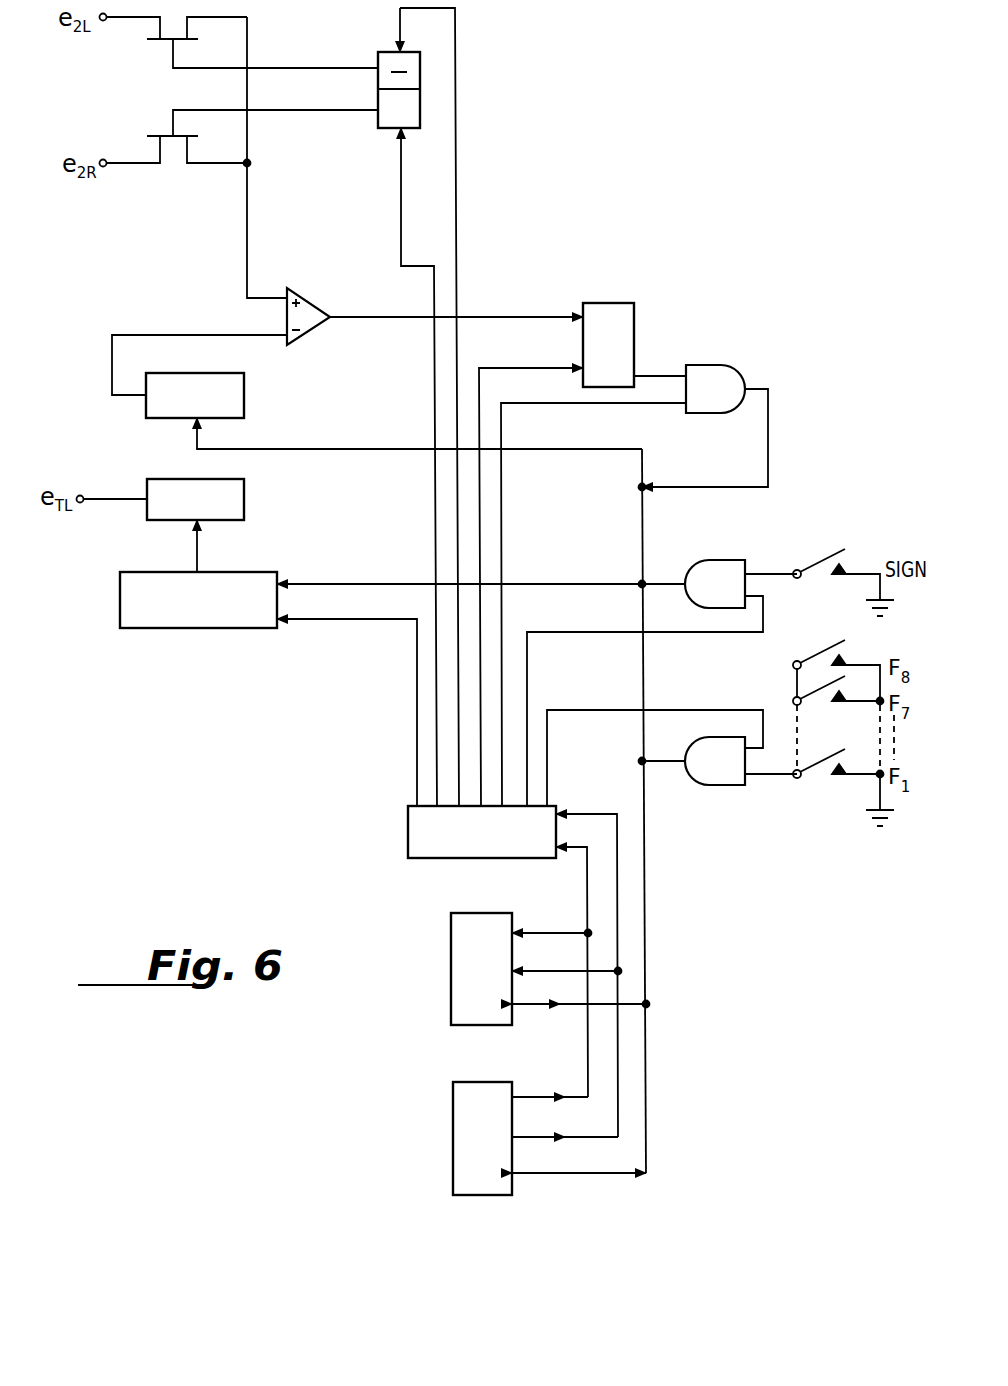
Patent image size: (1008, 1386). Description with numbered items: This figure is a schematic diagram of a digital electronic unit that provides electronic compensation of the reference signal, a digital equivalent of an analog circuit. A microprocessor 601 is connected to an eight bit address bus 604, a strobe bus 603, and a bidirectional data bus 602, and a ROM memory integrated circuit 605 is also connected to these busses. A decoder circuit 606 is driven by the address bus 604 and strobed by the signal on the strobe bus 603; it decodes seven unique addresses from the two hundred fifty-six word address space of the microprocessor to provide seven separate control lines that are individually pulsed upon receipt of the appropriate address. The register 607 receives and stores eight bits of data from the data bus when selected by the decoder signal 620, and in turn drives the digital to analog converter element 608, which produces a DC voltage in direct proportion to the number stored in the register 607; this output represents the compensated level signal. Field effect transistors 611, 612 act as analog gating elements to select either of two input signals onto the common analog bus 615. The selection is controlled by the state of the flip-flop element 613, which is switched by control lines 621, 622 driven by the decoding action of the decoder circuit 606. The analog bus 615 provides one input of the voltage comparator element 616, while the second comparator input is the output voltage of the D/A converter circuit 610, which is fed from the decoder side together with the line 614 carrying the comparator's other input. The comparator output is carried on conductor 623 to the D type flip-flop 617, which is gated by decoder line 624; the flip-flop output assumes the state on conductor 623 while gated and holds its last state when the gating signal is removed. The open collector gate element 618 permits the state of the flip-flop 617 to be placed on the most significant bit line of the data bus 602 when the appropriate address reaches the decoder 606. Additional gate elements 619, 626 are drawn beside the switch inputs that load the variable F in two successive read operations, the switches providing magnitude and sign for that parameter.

The microprocessor 601 is at (490, 1183).
The bidirectional data bus 602 is at (650, 1150).
The strobe bus 603 is at (620, 1098).
The address bus 604 is at (588, 1042).
The ROM memory integrated circuit 605 is at (455, 957).
The decoder circuit 606 is at (418, 828).
The register 607 is at (133, 602).
The digital to analog converter element 608 is at (157, 510).
The D/A converter circuit 610 is at (152, 410).
The field effect transistor 611 is at (172, 155).
The field effect transistor 612 is at (168, 27).
The flip-flop element 613 is at (385, 55).
The reference input line 614 is at (110, 352).
The common analog bus 615 is at (247, 215).
The voltage comparator element 616 is at (309, 316).
The D type flip-flop 617 is at (620, 310).
The open collector gate element 618 is at (722, 385).
The AND gate 619 is at (718, 775).
The decoder signal 620 is at (416, 697).
The control line 621 is at (400, 222).
The control line 622 is at (456, 62).
The conductor 623 is at (508, 315).
The decoder line 624 is at (490, 368).
The AND gate 626 is at (713, 578).